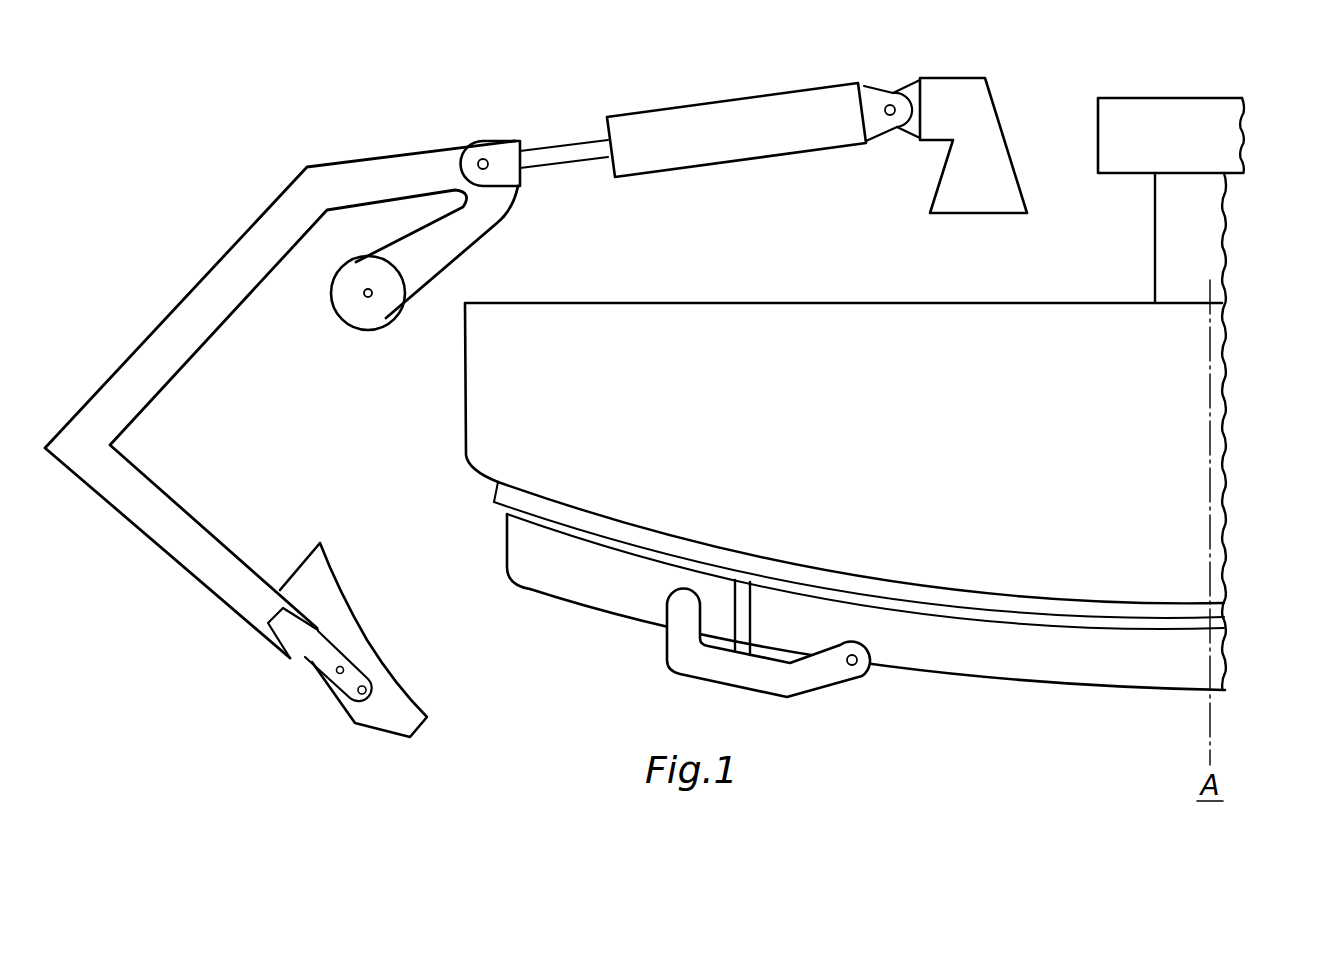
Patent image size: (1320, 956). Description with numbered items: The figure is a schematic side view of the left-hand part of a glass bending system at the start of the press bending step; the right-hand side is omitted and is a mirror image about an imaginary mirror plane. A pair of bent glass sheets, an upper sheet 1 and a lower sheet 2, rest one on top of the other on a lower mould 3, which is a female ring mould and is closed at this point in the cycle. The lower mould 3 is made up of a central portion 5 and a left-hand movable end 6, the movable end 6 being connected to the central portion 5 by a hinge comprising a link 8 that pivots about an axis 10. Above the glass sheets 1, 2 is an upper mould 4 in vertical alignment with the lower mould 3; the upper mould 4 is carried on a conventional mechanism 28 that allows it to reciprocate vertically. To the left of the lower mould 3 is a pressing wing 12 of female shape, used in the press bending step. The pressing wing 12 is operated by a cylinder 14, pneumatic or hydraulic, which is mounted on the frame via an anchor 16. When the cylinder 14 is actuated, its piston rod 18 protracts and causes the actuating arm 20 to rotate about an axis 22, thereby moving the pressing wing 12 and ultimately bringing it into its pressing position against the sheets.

The upper sheet 1 is at (1226, 608).
The lower sheet 2 is at (1226, 622).
The lower mould 3 is at (996, 710).
The upper mould 4 is at (873, 290).
The central portion 5 is at (1090, 662).
The left-hand movable end 6 is at (597, 590).
The link 8 is at (708, 668).
The axis 10 is at (853, 665).
The pressing wing 12 is at (348, 707).
The cylinder 14 is at (712, 124).
The anchor 16 is at (982, 111).
The piston rod 18 is at (553, 152).
The actuating arm 20 is at (190, 341).
The axis 22 is at (368, 293).
The mechanism 28 is at (1222, 135).